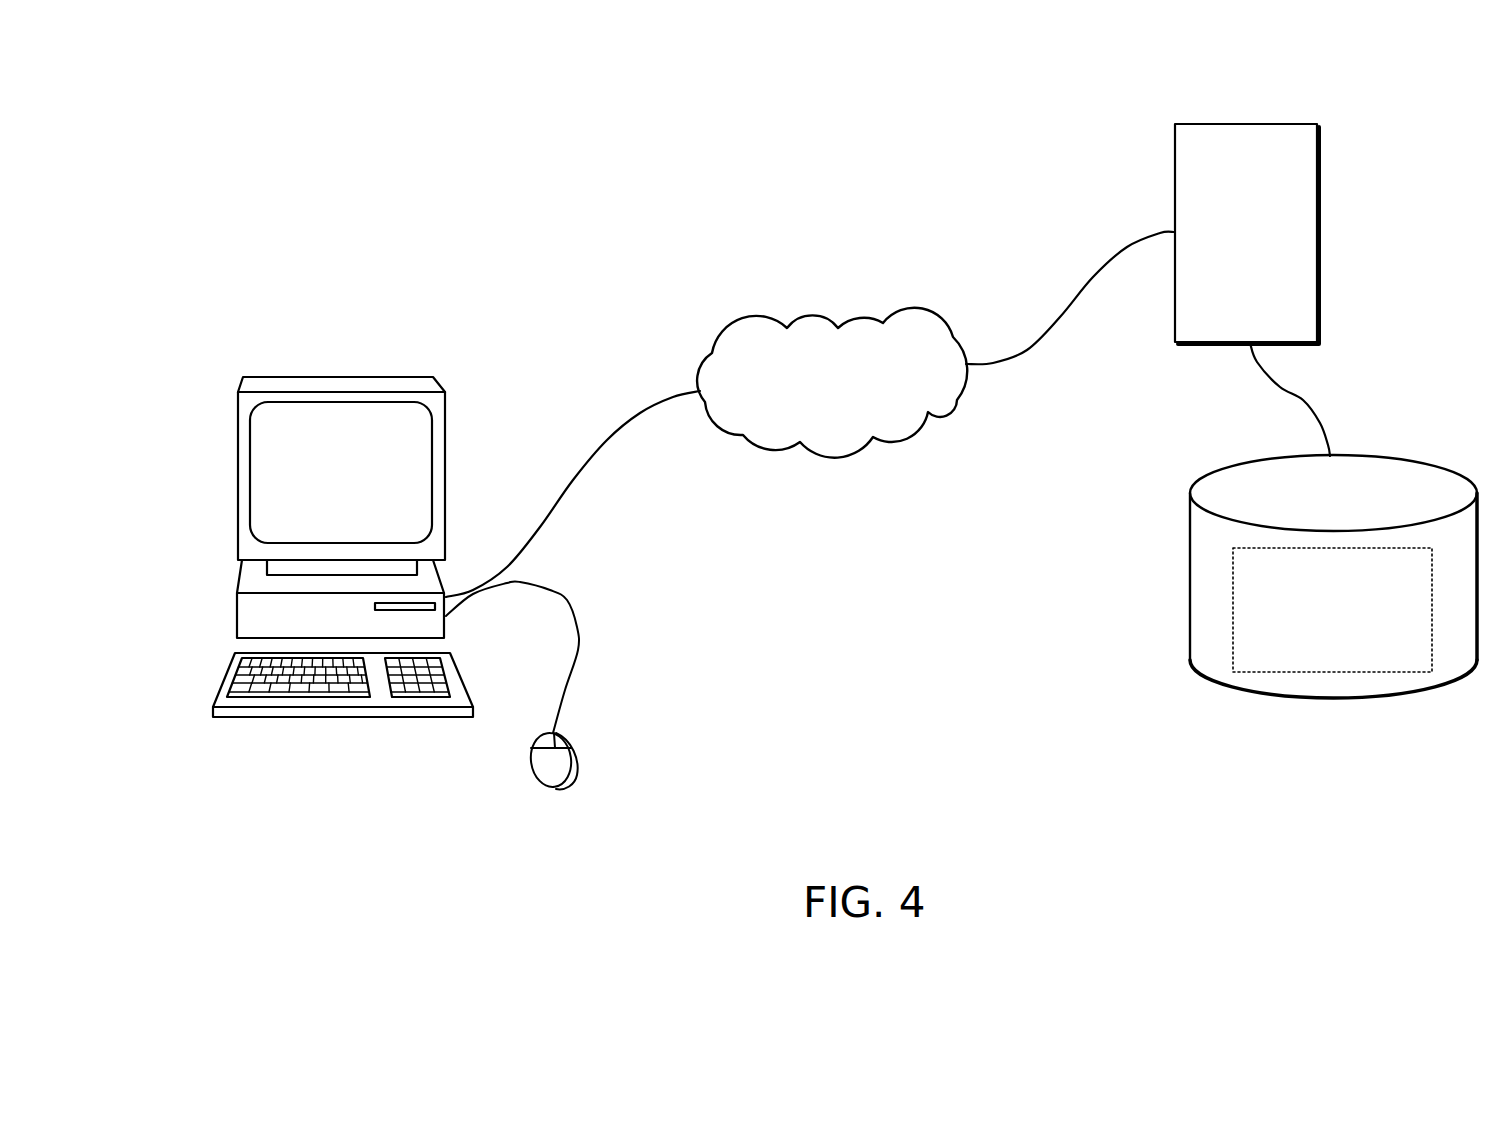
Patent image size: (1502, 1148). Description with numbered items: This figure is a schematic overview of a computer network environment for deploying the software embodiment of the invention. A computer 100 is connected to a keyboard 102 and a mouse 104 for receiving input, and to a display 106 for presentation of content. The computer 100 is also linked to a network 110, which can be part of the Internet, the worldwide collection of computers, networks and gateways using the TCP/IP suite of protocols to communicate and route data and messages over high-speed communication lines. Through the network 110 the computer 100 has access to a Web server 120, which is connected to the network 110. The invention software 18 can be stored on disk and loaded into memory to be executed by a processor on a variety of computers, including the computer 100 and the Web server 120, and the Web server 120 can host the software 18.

The invention software 18 is at (1342, 647).
The computer 100 is at (323, 630).
The keyboard 102 is at (225, 684).
The mouse 104 is at (574, 763).
The display 106 is at (319, 483).
The network 110 is at (803, 426).
The Web server 120 is at (1232, 296).